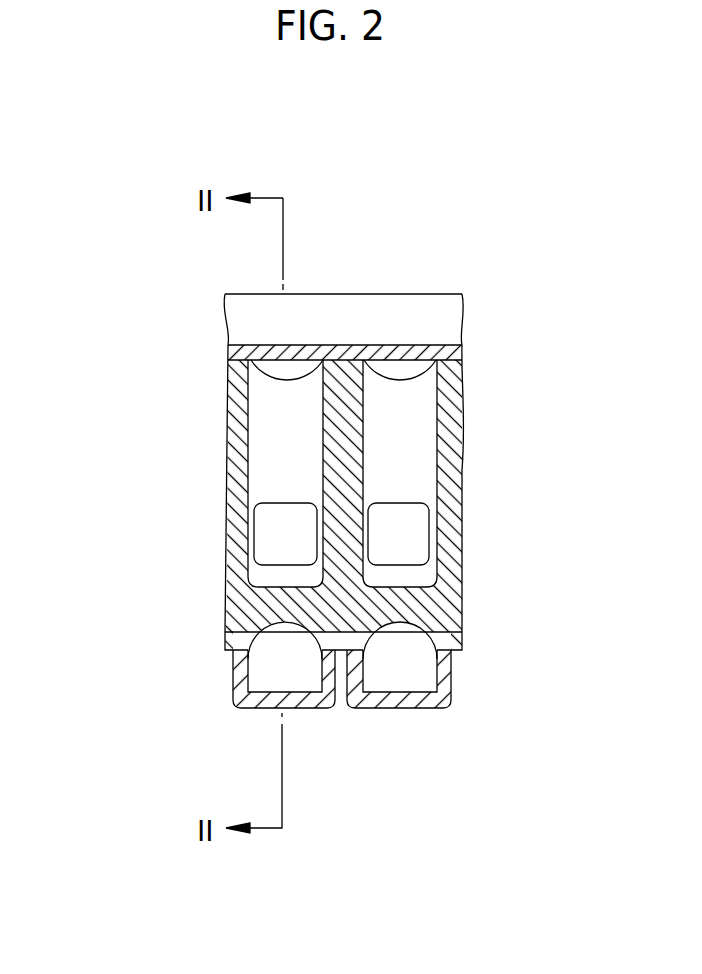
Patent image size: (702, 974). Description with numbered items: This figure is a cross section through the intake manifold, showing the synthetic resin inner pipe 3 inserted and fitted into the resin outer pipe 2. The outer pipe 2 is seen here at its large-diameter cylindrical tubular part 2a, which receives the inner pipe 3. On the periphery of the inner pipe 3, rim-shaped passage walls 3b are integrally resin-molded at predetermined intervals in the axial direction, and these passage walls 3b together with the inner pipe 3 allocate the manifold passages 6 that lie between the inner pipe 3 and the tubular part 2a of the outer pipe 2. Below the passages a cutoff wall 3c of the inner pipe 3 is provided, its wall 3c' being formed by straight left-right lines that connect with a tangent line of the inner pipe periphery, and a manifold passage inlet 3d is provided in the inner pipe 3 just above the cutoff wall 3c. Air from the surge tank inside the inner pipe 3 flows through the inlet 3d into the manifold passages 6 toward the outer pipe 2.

The outer pipe 2 is at (387, 702).
The tubular part 2a is at (443, 352).
The inner pipe 3 is at (448, 462).
The passage walls 3b is at (343, 372).
The cutoff wall 3c is at (393, 623).
The wall 3c' is at (330, 660).
The manifold passage inlet 3d is at (277, 532).
The manifold passages 6 is at (400, 372).